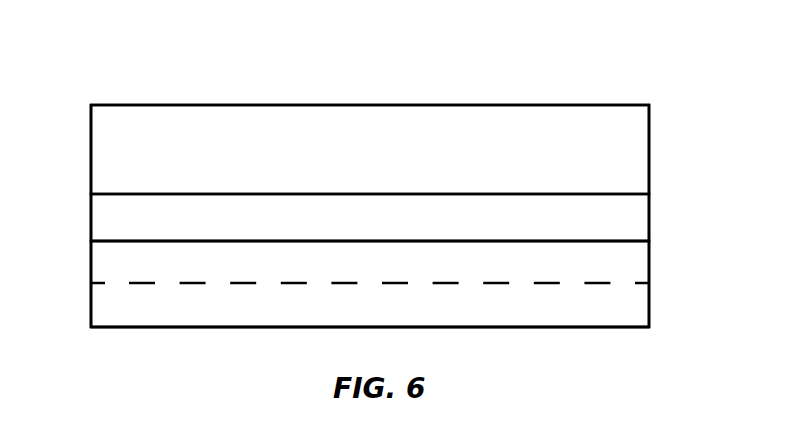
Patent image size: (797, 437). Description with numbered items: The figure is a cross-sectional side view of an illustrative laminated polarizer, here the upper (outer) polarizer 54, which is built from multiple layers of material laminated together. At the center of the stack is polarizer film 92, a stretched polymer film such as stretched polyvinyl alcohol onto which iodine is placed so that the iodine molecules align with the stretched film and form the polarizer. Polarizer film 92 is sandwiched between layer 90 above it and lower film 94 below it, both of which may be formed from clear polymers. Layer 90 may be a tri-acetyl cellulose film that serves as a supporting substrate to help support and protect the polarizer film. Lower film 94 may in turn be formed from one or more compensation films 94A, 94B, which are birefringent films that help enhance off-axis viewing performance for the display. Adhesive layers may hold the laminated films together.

The upper polarizer 54 is at (79, 59).
The layer 90 is at (641, 150).
The polarizer film 92 is at (641, 216).
The lower film 94 is at (79, 240).
The compensation film 94A is at (641, 262).
The compensation film 94B is at (641, 306).